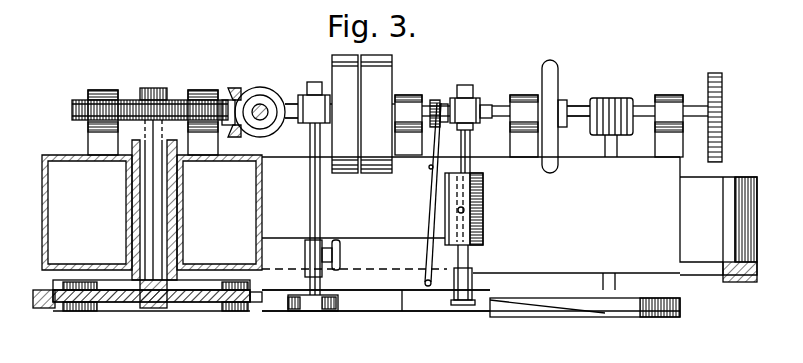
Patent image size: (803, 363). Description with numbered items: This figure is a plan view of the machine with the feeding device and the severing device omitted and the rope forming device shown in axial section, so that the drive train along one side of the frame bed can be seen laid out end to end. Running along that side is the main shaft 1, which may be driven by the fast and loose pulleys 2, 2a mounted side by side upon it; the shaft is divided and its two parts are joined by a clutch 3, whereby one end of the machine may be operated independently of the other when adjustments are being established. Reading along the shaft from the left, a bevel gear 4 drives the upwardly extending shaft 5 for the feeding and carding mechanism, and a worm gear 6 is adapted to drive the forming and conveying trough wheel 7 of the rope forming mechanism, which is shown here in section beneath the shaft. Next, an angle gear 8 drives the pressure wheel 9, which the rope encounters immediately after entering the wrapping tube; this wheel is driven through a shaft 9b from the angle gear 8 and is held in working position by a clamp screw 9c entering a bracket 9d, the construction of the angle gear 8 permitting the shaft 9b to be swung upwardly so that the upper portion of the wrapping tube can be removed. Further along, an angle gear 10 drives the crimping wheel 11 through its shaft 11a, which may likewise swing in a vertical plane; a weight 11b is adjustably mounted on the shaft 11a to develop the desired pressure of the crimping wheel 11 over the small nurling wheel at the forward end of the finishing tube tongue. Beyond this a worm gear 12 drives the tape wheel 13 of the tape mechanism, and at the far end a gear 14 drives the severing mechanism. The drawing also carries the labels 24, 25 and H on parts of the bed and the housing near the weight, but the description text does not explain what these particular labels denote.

The main shaft 1 is at (288, 102).
The fast pulley 2 is at (376, 114).
The loose pulley 2a is at (345, 114).
The clutch 3 is at (436, 102).
The bevel gear 4 is at (235, 95).
The upwardly extending shaft 5 is at (262, 108).
The worm gear 6 is at (142, 98).
The forming and conveying trough wheel 7 is at (121, 300).
The angle gear 8 is at (308, 112).
The pressure wheel 9 is at (306, 306).
The shaft 9b is at (320, 208).
The clamp screw 9c is at (342, 255).
The bracket 9d is at (328, 242).
The angle gear 10 is at (476, 102).
The crimping wheel 11 is at (458, 304).
The shaft 11a is at (471, 166).
The weight 11b is at (483, 222).
The worm gear 12 is at (618, 100).
The tape wheel 13 is at (633, 318).
The gear 14 is at (722, 97).
The base bar 24 is at (373, 312).
The end cap 25 is at (43, 308).
The housing H is at (552, 218).